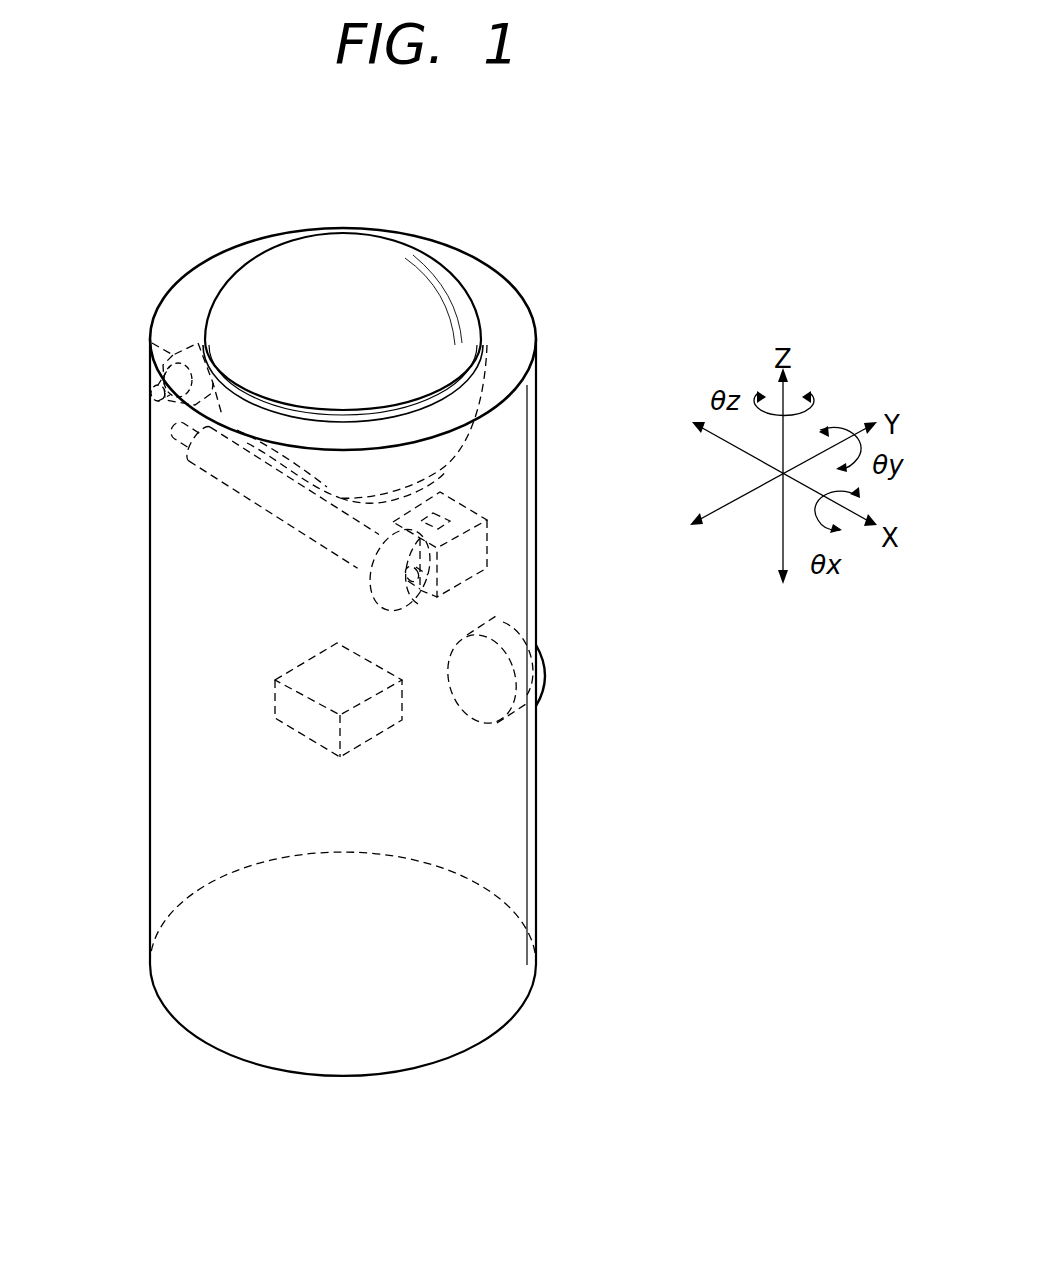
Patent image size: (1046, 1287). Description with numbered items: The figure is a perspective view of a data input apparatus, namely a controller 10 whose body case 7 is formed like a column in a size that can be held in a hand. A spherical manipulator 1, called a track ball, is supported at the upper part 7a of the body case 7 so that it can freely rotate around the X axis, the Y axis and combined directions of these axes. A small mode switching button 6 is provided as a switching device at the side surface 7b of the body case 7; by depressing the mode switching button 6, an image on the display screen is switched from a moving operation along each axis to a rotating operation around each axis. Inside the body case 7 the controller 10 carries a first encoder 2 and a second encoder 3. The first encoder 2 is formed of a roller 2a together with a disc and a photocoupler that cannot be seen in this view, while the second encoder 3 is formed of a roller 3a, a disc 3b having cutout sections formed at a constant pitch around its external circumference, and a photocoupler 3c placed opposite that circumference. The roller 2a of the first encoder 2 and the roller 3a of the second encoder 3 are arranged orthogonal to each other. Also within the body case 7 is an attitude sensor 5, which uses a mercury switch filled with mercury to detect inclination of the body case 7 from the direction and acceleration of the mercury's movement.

The spherical manipulator 1 is at (362, 245).
The first encoder 2 is at (190, 343).
The roller 2a is at (165, 357).
The second encoder 3 is at (320, 548).
The roller 3a is at (436, 474).
The disc 3b is at (420, 610).
The photocoupler 3c is at (490, 542).
The attitude sensor 5 is at (297, 724).
The mode switching button 6 is at (547, 672).
The body case 7 is at (147, 695).
The upper part 7a is at (513, 312).
The side surface 7b is at (517, 823).
The controller 10 is at (503, 252).